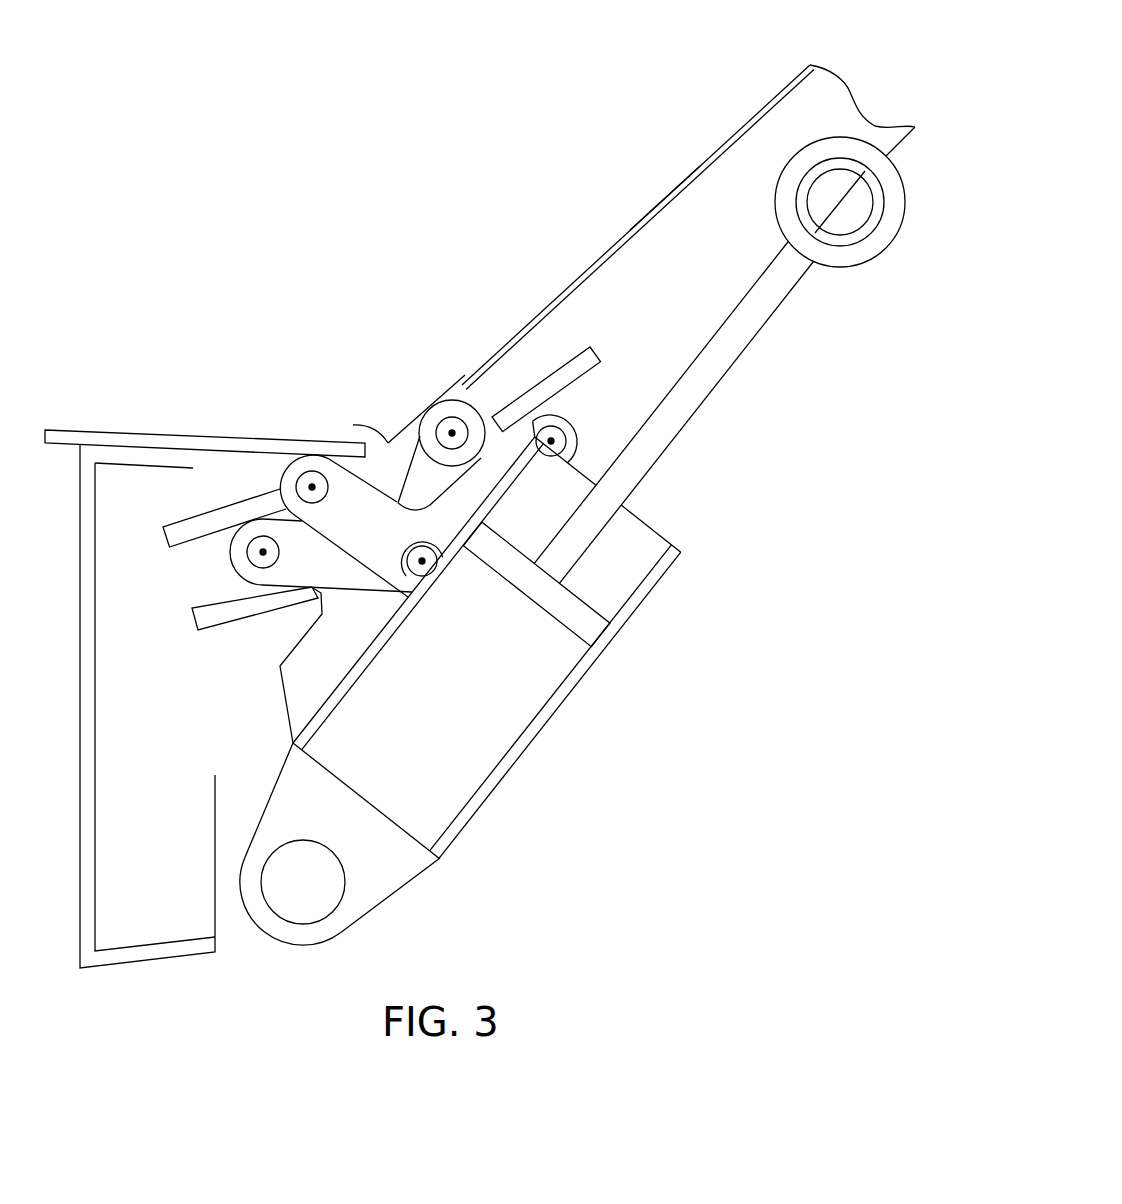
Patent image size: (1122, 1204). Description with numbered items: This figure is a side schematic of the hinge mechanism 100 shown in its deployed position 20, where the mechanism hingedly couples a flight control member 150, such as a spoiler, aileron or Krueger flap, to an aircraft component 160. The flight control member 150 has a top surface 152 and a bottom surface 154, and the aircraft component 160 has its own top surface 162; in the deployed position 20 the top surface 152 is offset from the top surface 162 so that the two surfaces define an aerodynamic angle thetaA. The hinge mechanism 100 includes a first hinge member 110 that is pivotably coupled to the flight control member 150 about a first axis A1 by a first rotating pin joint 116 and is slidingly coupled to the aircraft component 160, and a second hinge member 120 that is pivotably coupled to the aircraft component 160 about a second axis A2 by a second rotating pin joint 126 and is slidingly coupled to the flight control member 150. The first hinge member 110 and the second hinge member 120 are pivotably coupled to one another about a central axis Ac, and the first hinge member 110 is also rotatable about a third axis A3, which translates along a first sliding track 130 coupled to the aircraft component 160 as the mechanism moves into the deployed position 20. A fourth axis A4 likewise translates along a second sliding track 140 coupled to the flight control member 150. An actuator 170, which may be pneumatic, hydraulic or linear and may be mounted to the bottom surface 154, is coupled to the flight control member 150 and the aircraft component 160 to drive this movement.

The deployed position 20 is at (669, 793).
The hinge mechanism 100 is at (295, 346).
The first hinge member 110 is at (340, 766).
The first rotating pin joint 116 is at (435, 371).
The second hinge member 120 is at (380, 488).
The second rotating pin joint 126 is at (291, 437).
The first sliding track 130 is at (237, 514).
The second sliding track 140 is at (546, 343).
The flight control member 150 is at (688, 210).
The top surface 152 is at (620, 223).
The bottom surface 154 is at (893, 147).
The aircraft component 160 is at (140, 644).
The top surface 162 is at (118, 430).
The actuator 170 is at (553, 567).
The first axis A1 is at (452, 433).
The second axis A2 is at (314, 489).
The third axis A3 is at (262, 552).
The fourth axis A4 is at (553, 441).
The central axis Ac is at (424, 563).
The aerodynamic angle thetaA is at (357, 426).